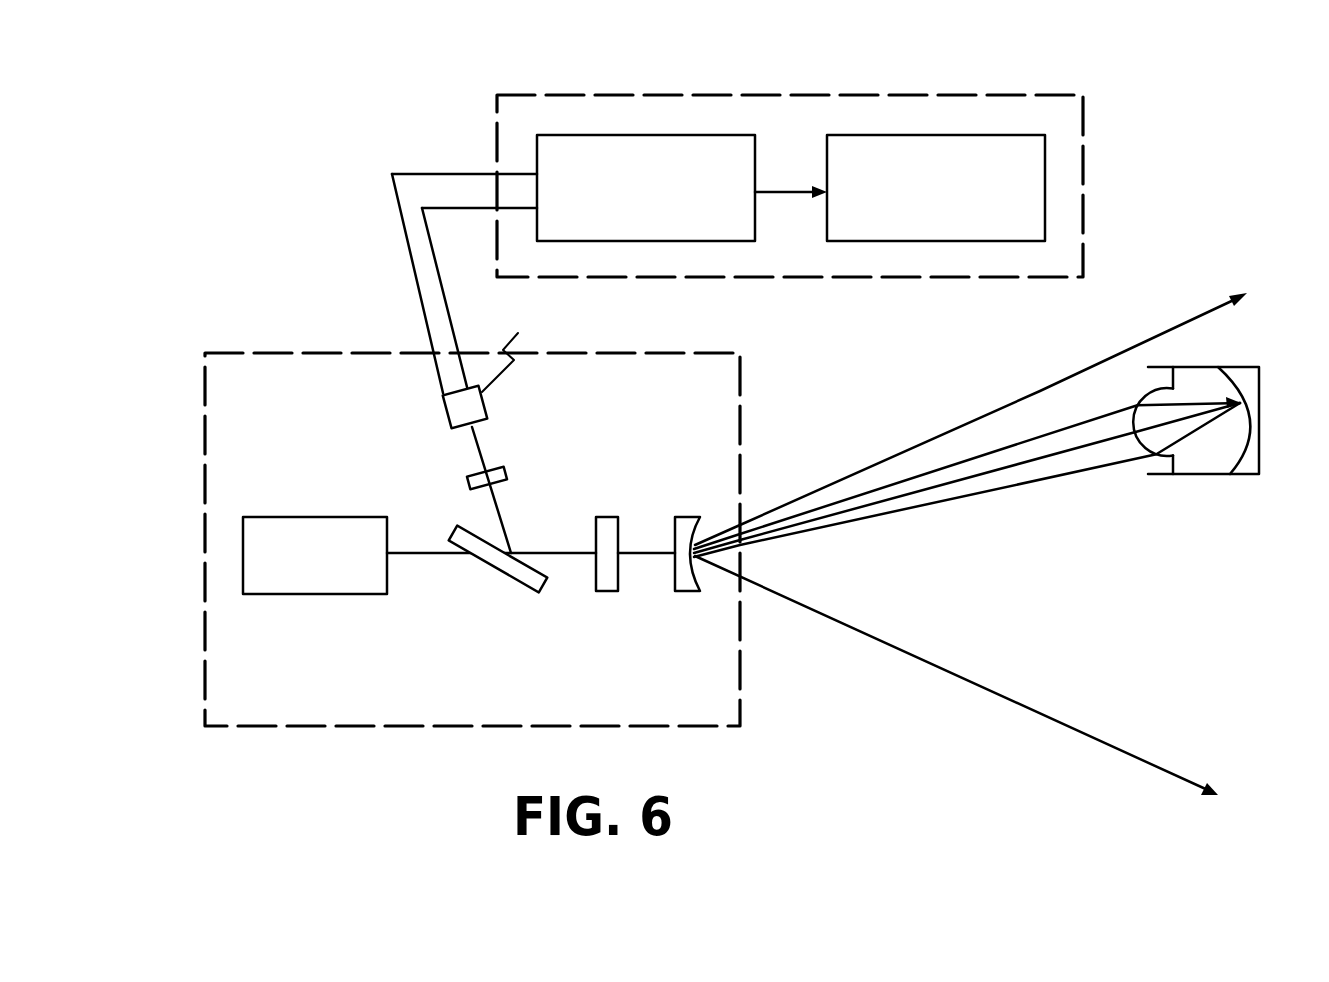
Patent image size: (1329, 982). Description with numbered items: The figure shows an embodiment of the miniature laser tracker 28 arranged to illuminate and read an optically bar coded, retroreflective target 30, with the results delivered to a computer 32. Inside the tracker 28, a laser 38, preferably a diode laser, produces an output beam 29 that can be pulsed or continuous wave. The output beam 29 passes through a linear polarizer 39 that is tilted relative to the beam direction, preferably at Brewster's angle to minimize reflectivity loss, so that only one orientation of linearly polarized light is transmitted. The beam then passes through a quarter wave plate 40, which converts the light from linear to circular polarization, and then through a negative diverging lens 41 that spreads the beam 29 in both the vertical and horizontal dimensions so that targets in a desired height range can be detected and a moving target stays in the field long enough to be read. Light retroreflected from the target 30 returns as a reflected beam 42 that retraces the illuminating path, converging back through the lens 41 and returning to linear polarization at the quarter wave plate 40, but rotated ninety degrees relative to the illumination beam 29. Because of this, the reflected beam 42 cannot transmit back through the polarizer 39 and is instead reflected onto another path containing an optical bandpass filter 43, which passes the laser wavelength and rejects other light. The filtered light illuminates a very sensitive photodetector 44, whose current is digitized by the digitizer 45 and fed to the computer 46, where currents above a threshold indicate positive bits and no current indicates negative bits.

The miniature laser tracker 28 is at (328, 308).
The output beam 29 is at (423, 558).
The retroreflective target 30 is at (1233, 367).
The computer 32 is at (1083, 148).
The laser 38 is at (293, 518).
The polarizer 39 is at (503, 592).
The quarter wave plate 40 is at (605, 591).
The diverging lens 41 is at (683, 591).
The reflected beam 42 is at (1073, 475).
The optical bandpass filter 43 is at (505, 473).
The photodetector 44 is at (487, 408).
The digitizer 45 is at (617, 135).
The computer 46 is at (888, 135).